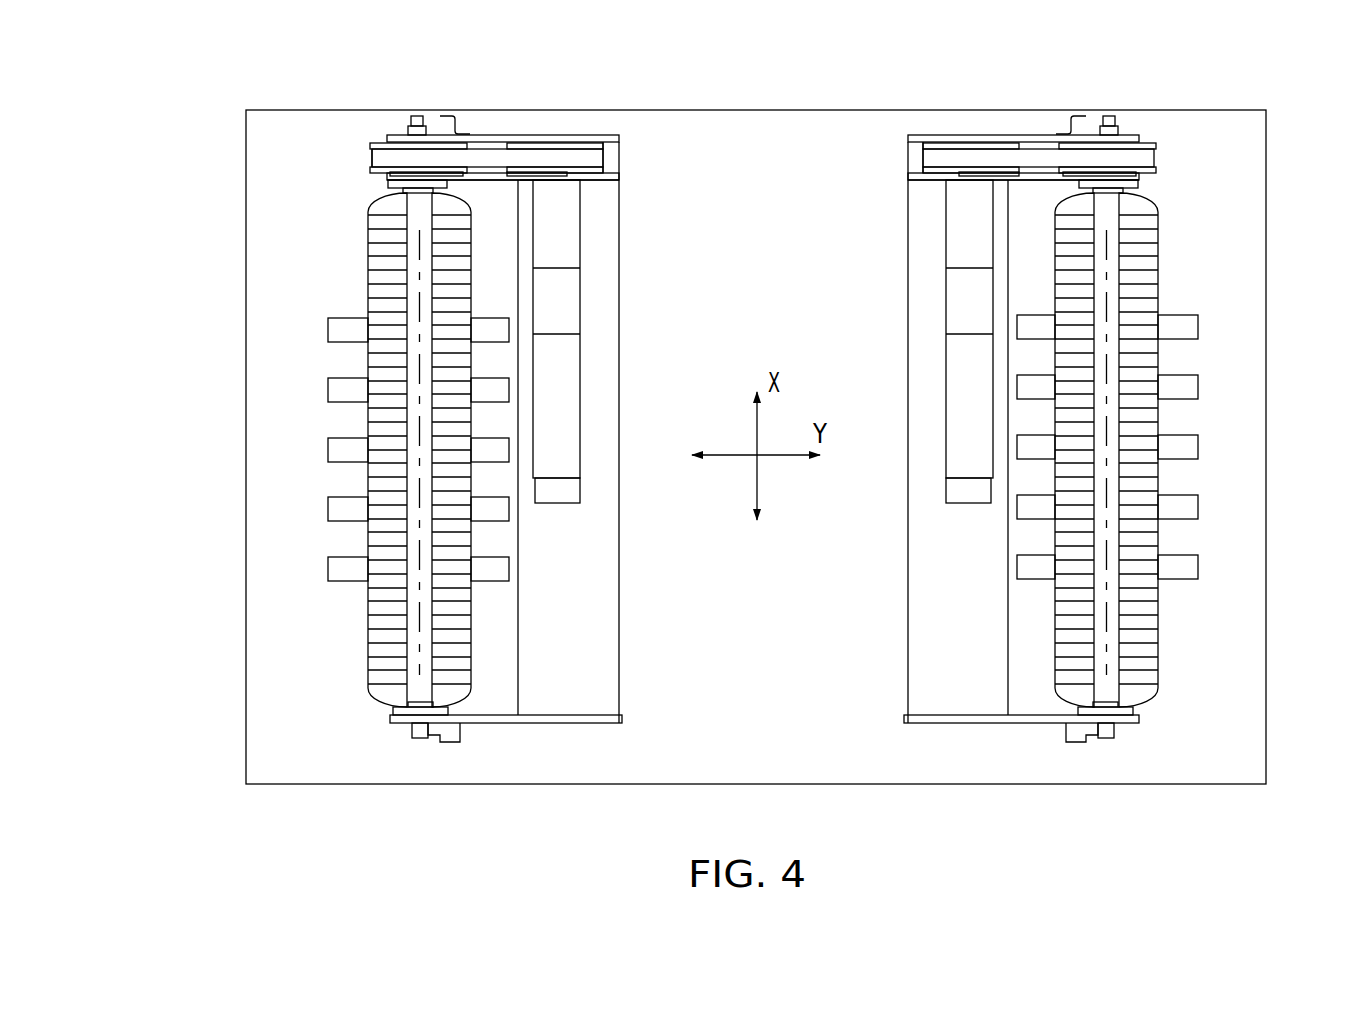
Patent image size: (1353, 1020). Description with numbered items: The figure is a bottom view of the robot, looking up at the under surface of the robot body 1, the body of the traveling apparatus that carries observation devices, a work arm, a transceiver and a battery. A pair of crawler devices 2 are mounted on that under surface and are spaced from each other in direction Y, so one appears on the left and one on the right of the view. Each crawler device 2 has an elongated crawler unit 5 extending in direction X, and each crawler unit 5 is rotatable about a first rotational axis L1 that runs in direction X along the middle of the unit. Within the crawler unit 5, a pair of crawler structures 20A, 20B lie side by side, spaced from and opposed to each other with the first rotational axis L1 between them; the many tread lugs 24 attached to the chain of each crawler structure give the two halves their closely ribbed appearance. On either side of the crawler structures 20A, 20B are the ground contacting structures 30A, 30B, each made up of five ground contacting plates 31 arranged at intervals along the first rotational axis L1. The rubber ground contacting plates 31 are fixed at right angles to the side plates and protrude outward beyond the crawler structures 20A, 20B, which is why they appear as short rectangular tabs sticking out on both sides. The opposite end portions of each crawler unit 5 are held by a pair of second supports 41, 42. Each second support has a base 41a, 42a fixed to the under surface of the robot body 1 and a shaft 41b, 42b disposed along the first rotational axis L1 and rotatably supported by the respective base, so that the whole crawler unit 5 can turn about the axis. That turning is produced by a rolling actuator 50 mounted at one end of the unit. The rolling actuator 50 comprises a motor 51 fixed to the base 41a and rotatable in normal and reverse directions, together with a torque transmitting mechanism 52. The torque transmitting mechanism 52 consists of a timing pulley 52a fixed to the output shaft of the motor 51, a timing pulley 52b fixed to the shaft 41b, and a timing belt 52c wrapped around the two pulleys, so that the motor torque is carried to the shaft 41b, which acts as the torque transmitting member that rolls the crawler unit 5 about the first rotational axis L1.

The robot body 1 is at (1180, 108).
The crawler device 2 is at (604, 358).
The crawler unit 5 is at (309, 361).
The crawler structure 20A is at (352, 610).
The crawler structure 20B is at (484, 610).
The tread lug 24 is at (377, 490).
The ground contacting structure 30A is at (317, 513).
The ground contacting structure 30B is at (518, 512).
The ground contacting plate 31 is at (343, 568).
The second support 41 is at (751, 218).
The base 41a is at (547, 182).
The shaft 41b is at (417, 197).
The second support 42 is at (758, 706).
The base 42a is at (540, 724).
The shaft 42b is at (420, 704).
The rolling actuator 50 is at (716, 144).
The motor 51 is at (567, 413).
The torque transmitting mechanism 52 is at (607, 158).
The timing pulley 52a is at (597, 172).
The timing pulley 52b is at (373, 172).
The timing belt 52c is at (580, 160).
The first rotational axis L1 is at (417, 403).